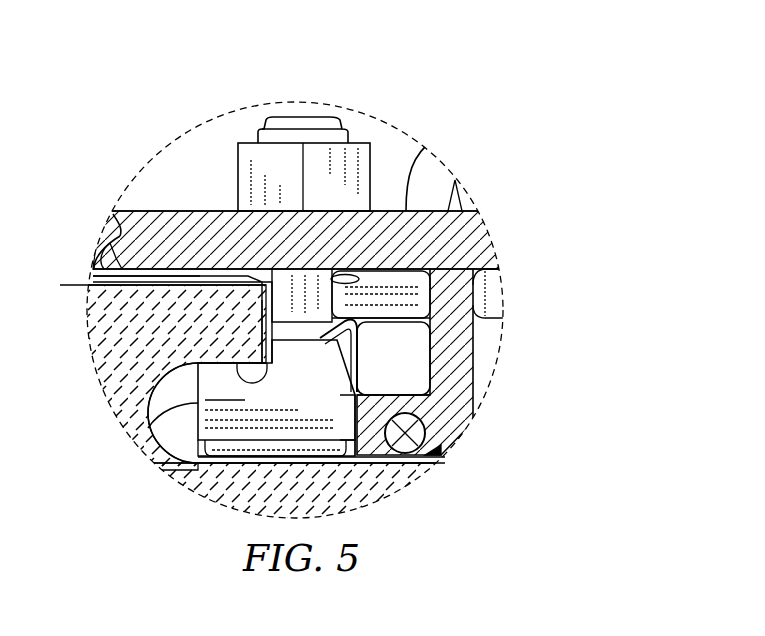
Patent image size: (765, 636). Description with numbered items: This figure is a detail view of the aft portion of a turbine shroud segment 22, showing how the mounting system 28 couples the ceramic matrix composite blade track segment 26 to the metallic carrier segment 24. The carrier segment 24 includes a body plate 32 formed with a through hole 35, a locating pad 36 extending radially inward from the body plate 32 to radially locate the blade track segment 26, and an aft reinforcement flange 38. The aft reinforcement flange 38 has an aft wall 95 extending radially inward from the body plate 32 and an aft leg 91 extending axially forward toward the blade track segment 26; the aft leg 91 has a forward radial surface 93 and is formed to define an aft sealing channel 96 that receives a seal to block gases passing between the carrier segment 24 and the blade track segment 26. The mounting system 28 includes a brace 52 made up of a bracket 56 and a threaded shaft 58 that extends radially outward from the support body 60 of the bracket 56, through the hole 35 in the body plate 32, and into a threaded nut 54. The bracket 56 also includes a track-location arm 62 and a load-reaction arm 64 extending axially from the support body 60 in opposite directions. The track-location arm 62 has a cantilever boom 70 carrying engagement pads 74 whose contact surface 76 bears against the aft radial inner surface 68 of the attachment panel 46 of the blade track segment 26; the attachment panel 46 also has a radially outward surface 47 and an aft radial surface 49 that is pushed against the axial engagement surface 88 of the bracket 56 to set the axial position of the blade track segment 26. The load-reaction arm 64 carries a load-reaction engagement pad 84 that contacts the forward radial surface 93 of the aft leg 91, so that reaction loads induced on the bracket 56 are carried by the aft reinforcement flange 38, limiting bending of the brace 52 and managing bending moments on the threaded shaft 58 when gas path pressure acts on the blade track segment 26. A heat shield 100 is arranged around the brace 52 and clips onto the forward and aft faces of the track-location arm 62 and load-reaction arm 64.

The turbine shroud segment 22 is at (551, 105).
The carrier segment 24 is at (418, 148).
The blade track segment 26 is at (398, 484).
The mounting system 28 is at (310, 80).
The body plate 32 is at (142, 215).
The through hole 35 is at (335, 318).
The locating pad 36 is at (114, 243).
The aft reinforcement flange 38 is at (472, 393).
The attachment panel 46 is at (210, 300).
The radially outward surface 47 is at (178, 283).
The aft radial surface 49 is at (298, 295).
The brace 52 is at (362, 353).
The threaded nut 54 is at (371, 140).
The bracket 56 is at (338, 388).
The threaded shaft 58 is at (318, 115).
The support body 60 is at (276, 424).
The track-location arm 62 is at (145, 545).
The load-reaction arm 64 is at (352, 456).
The aft radial inner surface 68 is at (213, 445).
The cantilever boom 70 is at (225, 423).
The engagement pad 74 is at (224, 371).
The contact surface 76 is at (205, 347).
The load-reaction engagement pad 84 is at (365, 409).
The axial engagement surface 88 is at (352, 273).
The aft leg 91 is at (398, 395).
The forward radial surface 93 is at (412, 461).
The aft wall 95 is at (458, 296).
The aft sealing channel 96 is at (442, 453).
The heat shield 100 is at (455, 272).